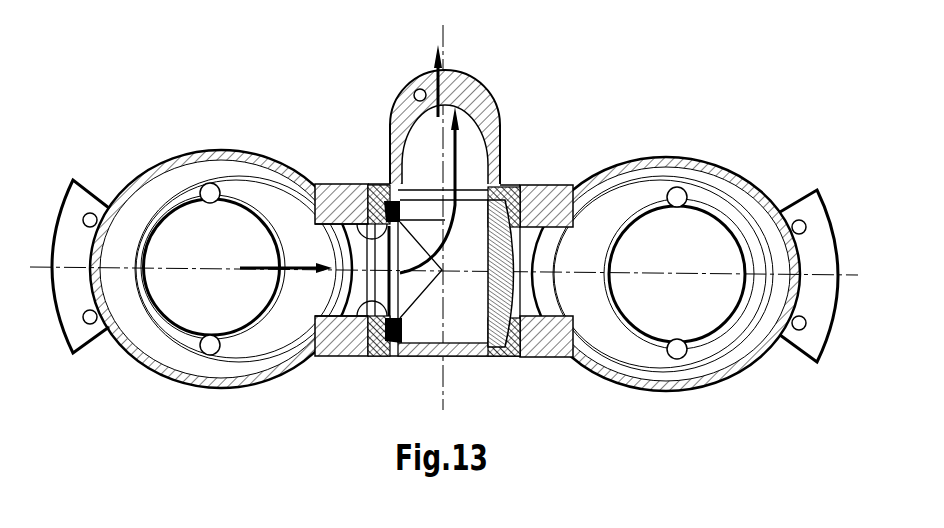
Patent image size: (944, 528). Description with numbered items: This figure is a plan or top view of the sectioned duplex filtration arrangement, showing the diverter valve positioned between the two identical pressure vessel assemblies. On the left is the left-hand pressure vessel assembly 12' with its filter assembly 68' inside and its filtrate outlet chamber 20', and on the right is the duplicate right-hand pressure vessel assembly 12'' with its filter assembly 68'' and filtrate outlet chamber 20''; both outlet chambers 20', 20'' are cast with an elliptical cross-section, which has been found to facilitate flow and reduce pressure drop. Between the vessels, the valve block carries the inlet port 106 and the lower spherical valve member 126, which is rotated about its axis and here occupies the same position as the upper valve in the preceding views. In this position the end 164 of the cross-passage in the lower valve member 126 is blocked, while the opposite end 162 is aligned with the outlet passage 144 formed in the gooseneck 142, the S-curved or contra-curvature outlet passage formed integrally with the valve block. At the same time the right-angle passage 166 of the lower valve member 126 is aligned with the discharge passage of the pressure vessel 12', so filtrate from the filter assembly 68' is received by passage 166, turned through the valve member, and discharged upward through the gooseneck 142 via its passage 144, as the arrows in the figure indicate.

The left-hand pressure vessel assembly 12' is at (217, 247).
The filtrate outlet chamber 20' is at (90, 297).
The filter assembly 68' is at (190, 310).
The right-hand pressure vessel assembly 12'' is at (672, 292).
The filtrate outlet chamber 20'' is at (790, 226).
The filter assembly 68'' is at (669, 217).
The inlet port 106 is at (473, 357).
The lower spherical valve member 126 is at (550, 187).
The gooseneck 142 is at (465, 72).
The outlet passage 144 is at (413, 88).
The end of cross-passage 162 is at (392, 150).
The end of cross-passage 164 is at (413, 353).
The right angle passage 166 is at (358, 222).